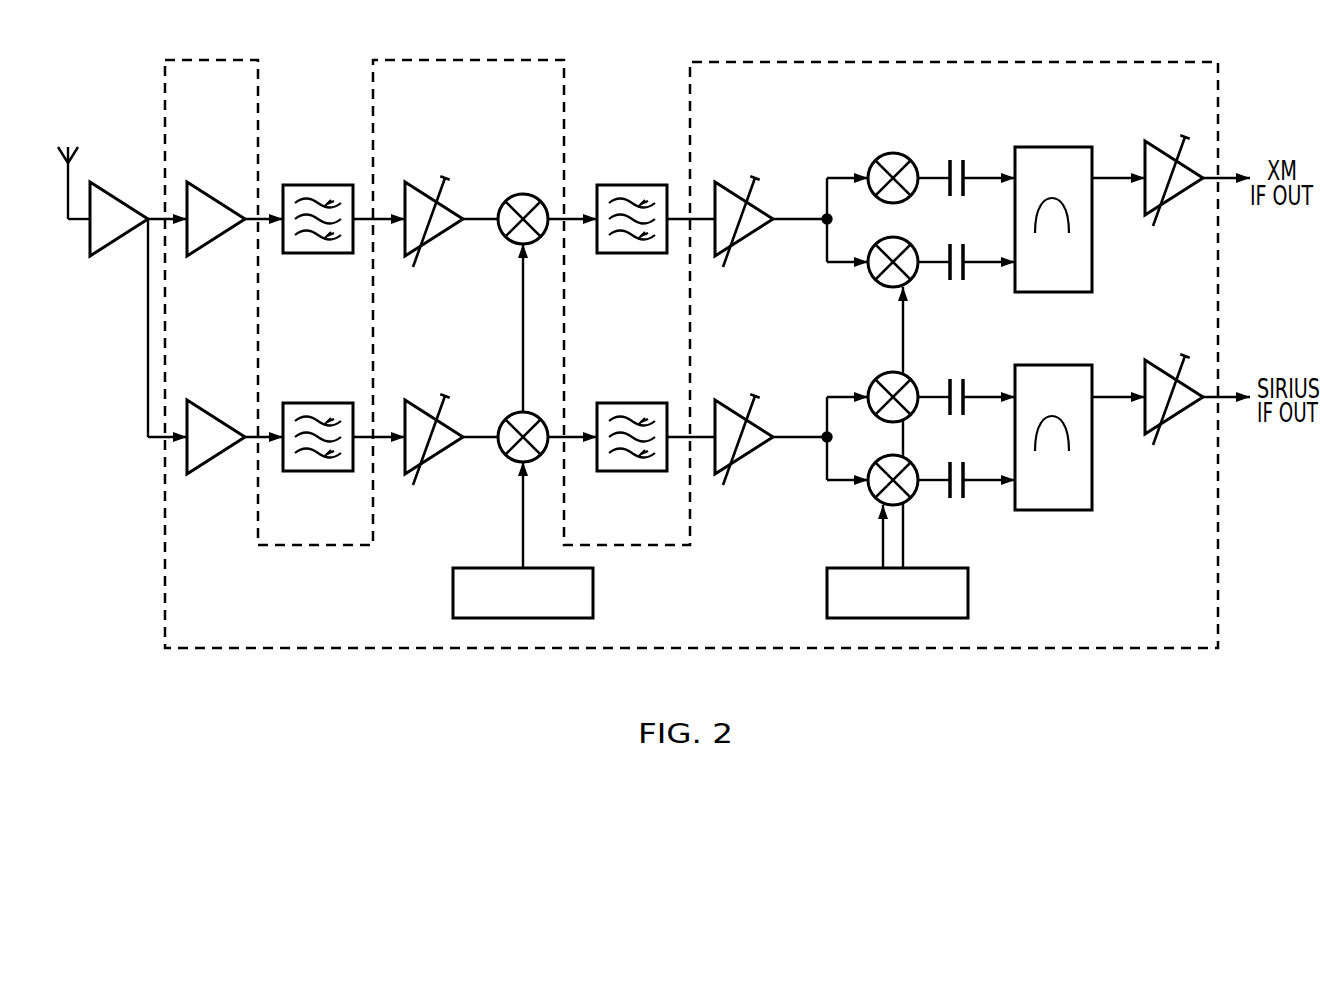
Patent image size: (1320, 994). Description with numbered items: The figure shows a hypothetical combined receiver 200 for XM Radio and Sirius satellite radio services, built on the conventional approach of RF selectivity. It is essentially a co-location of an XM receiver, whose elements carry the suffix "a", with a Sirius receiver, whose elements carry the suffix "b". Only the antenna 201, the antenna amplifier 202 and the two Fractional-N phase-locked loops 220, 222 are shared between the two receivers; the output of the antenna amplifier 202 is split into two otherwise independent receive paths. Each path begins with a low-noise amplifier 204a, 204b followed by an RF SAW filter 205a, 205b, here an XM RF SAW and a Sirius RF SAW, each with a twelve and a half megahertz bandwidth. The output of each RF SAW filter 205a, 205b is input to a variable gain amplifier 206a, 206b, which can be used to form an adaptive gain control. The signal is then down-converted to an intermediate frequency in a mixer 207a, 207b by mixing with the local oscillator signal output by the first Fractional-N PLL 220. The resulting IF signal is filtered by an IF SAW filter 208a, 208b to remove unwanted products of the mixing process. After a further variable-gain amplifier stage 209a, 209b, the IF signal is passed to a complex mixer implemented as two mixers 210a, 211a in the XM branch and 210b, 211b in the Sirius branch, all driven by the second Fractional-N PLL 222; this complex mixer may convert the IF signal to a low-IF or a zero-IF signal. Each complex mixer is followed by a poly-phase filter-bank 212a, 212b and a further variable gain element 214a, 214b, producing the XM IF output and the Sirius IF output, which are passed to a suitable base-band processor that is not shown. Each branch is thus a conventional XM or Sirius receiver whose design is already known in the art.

The combined receiver 200 is at (1172, 630).
The antenna 201 is at (75, 152).
The antenna amplifier 202 is at (118, 188).
The low-noise amplifier 204a is at (217, 237).
The low-noise amplifier 204b is at (222, 458).
The RF SAW filter 205a is at (322, 255).
The RF SAW filter 205b is at (322, 475).
The variable gain amplifier 206a is at (420, 185).
The variable gain amplifier 206b is at (435, 457).
The mixer 207a is at (523, 194).
The mixer 207b is at (520, 413).
The IF SAW filter 208a is at (617, 258).
The IF SAW filter 208b is at (623, 473).
The variable-gain amplifier stage 209a is at (752, 238).
The variable-gain amplifier stage 209b is at (750, 457).
The mixer 210a is at (880, 155).
The mixer 210b is at (873, 380).
The mixer 211a is at (877, 280).
The mixer 211b is at (872, 498).
The poly-phase filter-bank 212a is at (1040, 147).
The poly-phase filter-bank 212b is at (1065, 512).
The variable gain element 214a is at (1163, 143).
The variable gain element 214b is at (1177, 420).
The first Fractional-N PLL 220 is at (453, 593).
The second Fractional-N PLL 222 is at (968, 597).